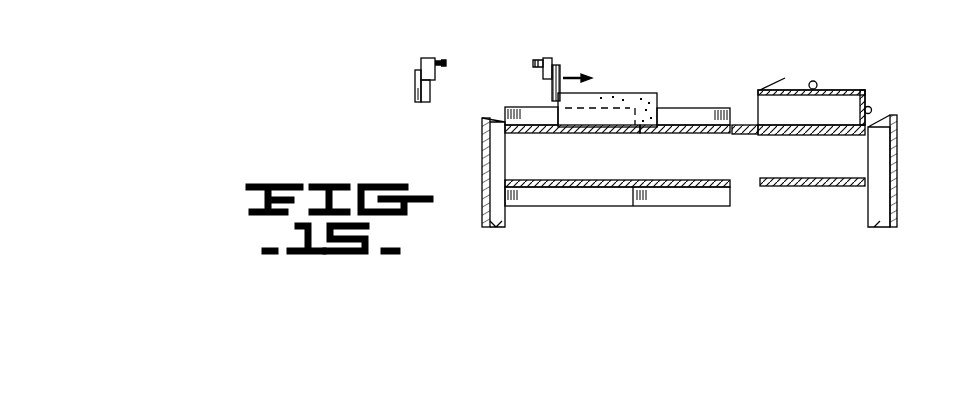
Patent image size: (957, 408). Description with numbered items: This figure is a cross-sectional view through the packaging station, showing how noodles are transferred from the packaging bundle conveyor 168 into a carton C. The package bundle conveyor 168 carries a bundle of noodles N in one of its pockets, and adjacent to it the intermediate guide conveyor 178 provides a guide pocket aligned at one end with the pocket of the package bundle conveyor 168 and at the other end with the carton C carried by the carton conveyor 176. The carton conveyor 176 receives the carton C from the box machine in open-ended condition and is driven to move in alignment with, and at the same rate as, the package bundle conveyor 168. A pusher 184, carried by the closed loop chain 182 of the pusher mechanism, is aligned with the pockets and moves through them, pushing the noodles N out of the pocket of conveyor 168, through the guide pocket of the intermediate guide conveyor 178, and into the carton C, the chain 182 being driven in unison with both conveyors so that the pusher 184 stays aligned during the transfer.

The closed loop chain 182 is at (440, 56).
The pusher 184 is at (560, 70).
The noodles N is at (620, 93).
The packaging bundle conveyor 168 is at (555, 133).
The intermediate guide conveyor 178 is at (662, 134).
The carton conveyor 176 is at (797, 137).
The carton C is at (842, 93).